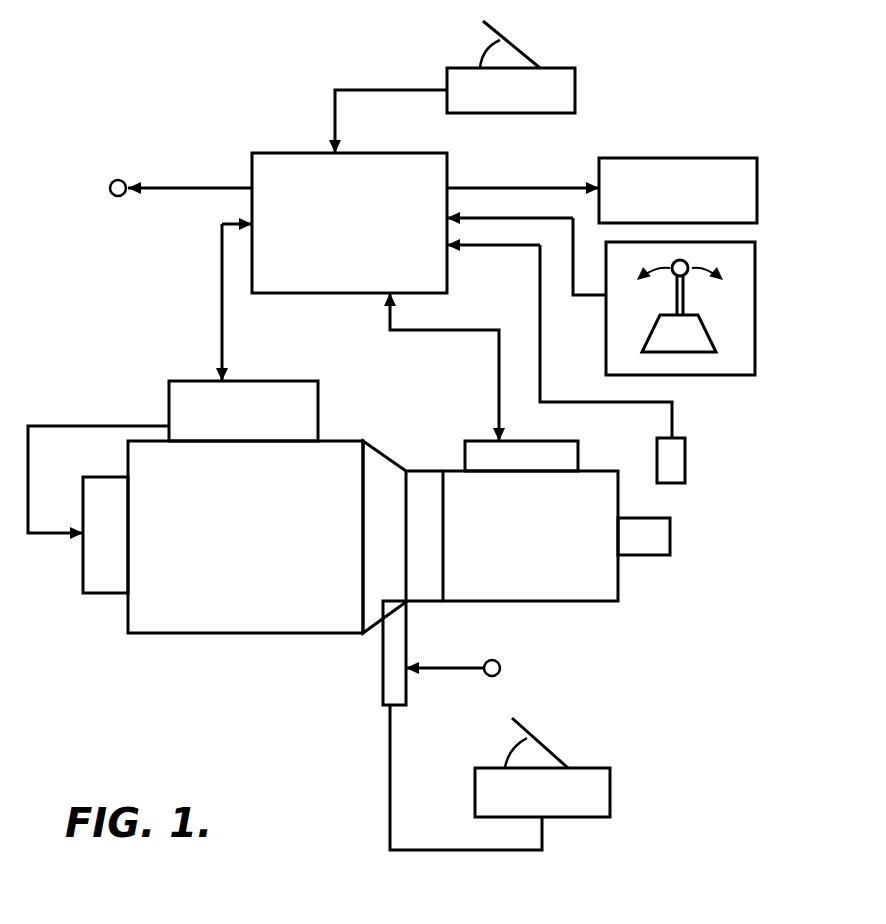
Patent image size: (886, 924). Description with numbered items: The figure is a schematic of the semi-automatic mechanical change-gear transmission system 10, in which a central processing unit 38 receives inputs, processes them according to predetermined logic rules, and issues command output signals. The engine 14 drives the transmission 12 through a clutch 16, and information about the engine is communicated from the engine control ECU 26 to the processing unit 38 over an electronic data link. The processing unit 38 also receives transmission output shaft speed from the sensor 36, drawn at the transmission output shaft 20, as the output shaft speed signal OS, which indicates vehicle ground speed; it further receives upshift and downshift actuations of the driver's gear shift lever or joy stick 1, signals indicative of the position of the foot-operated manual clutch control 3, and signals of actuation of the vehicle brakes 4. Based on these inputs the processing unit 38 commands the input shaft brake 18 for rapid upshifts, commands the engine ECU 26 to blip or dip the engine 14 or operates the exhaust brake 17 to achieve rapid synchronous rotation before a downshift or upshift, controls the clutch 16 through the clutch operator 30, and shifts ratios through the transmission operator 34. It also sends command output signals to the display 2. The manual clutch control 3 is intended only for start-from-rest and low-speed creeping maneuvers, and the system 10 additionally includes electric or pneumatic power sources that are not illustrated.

The semi-automatic mechanical transmission system 10 is at (782, 260).
The processing unit 38 is at (287, 177).
The vehicle brakes 4 is at (528, 90).
The display 2 is at (705, 158).
The gear shift lever 1 is at (735, 297).
The engine control ECU 26 is at (185, 392).
The engine 14 is at (163, 612).
The exhaust brake 17 is at (105, 585).
The clutch 16 is at (385, 490).
The input shaft brake 18 is at (427, 593).
The transmission 12 is at (578, 578).
The transmission operator 34 is at (480, 460).
The transmission output shaft 20 is at (650, 535).
The output shaft speed sensor 36 is at (672, 468).
The output shaft speed signal OS is at (672, 417).
The clutch operator 30 is at (392, 677).
The manual clutch control 3 is at (585, 800).